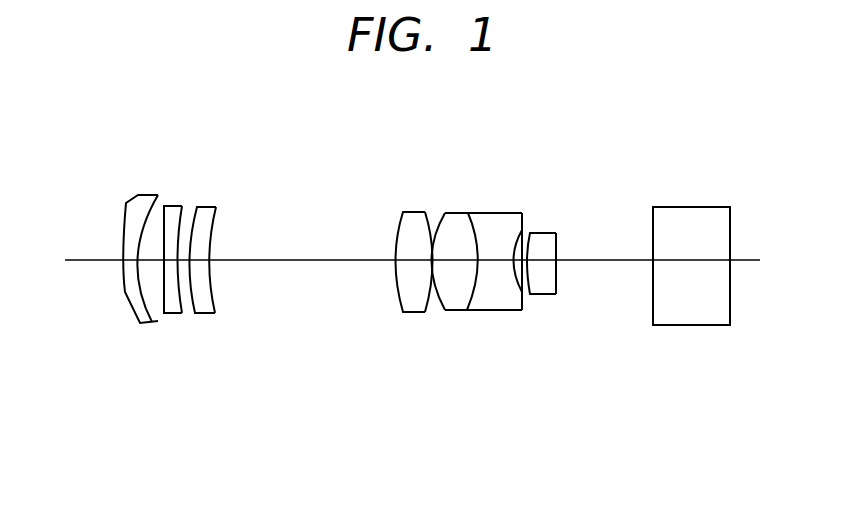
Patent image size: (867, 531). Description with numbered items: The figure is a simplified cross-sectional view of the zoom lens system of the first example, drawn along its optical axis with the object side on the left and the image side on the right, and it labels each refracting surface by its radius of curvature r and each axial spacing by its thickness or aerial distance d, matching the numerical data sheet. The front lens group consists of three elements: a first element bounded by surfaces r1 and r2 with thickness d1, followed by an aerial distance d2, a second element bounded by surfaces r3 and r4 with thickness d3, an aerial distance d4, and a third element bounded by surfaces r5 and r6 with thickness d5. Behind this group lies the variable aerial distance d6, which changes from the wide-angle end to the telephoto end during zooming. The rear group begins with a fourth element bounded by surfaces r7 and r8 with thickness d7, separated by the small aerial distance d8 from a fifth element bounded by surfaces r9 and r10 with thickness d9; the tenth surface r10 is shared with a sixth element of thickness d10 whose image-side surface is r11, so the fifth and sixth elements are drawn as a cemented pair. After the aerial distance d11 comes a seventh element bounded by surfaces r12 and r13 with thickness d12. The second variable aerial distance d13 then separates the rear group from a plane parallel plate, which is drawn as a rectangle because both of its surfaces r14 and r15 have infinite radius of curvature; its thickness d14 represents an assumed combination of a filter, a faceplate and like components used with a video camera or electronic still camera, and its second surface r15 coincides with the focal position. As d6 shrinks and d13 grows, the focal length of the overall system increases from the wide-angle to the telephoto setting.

The first lens surface radius of curvature r1 is at (138, 194).
The second lens surface radius of curvature r2 is at (152, 218).
The third lens surface radius of curvature r3 is at (166, 206).
The fourth lens surface radius of curvature r4 is at (182, 206).
The fifth lens surface radius of curvature r5 is at (197, 207).
The sixth lens surface radius of curvature r6 is at (216, 207).
The seventh lens surface radius of curvature r7 is at (403, 212).
The eighth lens surface radius of curvature r8 is at (425, 212).
The ninth lens surface radius of curvature r9 is at (445, 213).
The tenth lens surface radius of curvature r10 is at (470, 214).
The eleventh lens surface radius of curvature r11 is at (529, 244).
The twelfth lens surface radius of curvature r12 is at (531, 234).
The thirteenth lens surface radius of curvature r13 is at (557, 236).
The fourteenth surface radius of curvature r14 is at (654, 208).
The fifteenth surface radius of curvature r15 is at (731, 212).
The first lens element thickness d1 is at (128, 260).
The first aerial distance d2 is at (150, 260).
The second lens element thickness d3 is at (170, 260).
The second aerial distance d4 is at (186, 260).
The third lens element thickness d5 is at (203, 260).
The variable aerial distance d6 is at (308, 260).
The fourth lens element thickness d7 is at (410, 260).
The third aerial distance d8 is at (428, 260).
The fifth lens element thickness d9 is at (455, 260).
The sixth lens element thickness d10 is at (495, 260).
The fourth aerial distance d11 is at (517, 260).
The seventh lens element thickness d12 is at (543, 260).
The variable aerial distance to plate d13 is at (608, 260).
The plane parallel plate thickness d14 is at (693, 260).